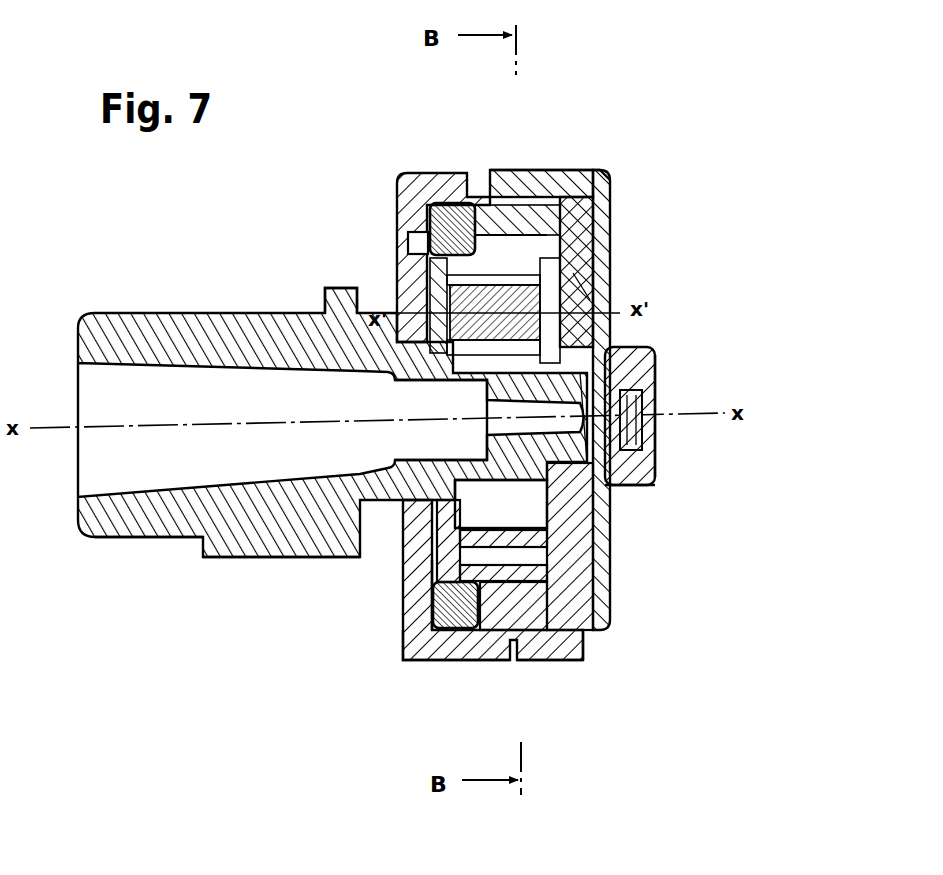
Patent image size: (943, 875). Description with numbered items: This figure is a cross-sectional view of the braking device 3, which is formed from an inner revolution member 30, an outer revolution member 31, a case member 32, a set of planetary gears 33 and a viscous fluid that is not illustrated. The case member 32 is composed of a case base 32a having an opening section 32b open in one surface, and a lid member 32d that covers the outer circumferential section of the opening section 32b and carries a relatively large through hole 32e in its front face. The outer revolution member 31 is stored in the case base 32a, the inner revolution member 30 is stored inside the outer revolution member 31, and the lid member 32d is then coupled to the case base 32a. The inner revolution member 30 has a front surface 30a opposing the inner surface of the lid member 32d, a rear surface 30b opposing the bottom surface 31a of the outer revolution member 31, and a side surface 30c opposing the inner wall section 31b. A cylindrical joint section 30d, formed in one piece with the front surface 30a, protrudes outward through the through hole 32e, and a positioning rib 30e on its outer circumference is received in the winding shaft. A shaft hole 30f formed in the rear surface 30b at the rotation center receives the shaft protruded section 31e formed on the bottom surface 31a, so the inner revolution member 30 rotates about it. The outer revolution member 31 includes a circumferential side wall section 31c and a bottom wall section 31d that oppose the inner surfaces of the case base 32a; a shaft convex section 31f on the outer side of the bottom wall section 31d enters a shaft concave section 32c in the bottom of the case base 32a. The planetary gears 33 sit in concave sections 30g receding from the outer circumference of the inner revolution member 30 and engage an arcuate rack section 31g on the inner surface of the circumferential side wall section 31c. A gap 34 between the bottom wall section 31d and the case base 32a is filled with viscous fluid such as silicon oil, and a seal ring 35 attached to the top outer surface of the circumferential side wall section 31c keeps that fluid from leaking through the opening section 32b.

The braking device 3 is at (605, 100).
The inner revolution member 30 is at (612, 527).
The front surface 30a is at (400, 540).
The rear surface 30b is at (592, 347).
The side surface 30c is at (537, 661).
The joint section 30d is at (137, 538).
The positioning rib 30e is at (230, 558).
The shaft hole 30f is at (405, 406).
The concave sections 30g is at (590, 295).
The outer revolution member 31 is at (610, 178).
The bottom surface 31a is at (640, 492).
The inner wall section 31b is at (598, 166).
The circumferential side wall section 31c is at (625, 182).
The bottom wall section 31d is at (612, 571).
The shaft protruded section 31e is at (640, 352).
The shaft convex section 31f is at (655, 366).
The arcuate rack section 31g is at (676, 414).
The case member 32 is at (610, 645).
The case base 32a is at (646, 661).
The opening section 32b is at (410, 244).
The shaft concave section 32c is at (636, 456).
The lid member 32d is at (403, 550).
The through hole 32e is at (402, 598).
The planetary gears 33 is at (557, 258).
The gap 34 is at (612, 614).
The seal ring 35 is at (424, 663).